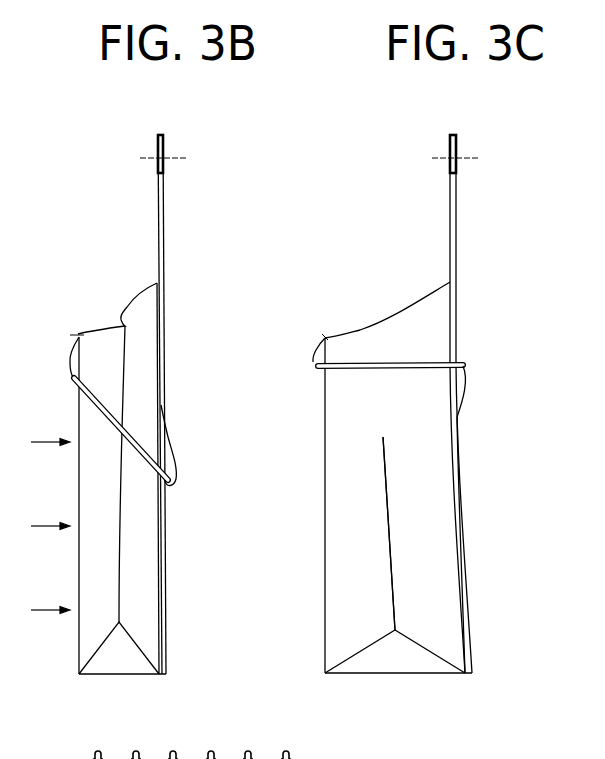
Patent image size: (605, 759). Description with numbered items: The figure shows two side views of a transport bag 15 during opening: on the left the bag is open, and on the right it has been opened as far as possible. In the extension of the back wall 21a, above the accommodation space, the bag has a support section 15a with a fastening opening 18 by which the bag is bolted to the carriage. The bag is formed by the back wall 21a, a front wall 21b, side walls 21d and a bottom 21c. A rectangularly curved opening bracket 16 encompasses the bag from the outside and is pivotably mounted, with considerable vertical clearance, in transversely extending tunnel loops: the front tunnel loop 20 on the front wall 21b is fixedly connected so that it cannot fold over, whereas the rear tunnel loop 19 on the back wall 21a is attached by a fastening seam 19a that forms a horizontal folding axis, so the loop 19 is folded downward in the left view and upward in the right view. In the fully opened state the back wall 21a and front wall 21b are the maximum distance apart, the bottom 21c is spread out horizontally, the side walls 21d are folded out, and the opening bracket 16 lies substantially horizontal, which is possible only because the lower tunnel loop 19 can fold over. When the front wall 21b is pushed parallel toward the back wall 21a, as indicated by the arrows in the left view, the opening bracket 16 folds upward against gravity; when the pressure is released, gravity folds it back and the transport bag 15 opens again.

In FIG. 3B, the transport bag 15 is at (180, 525).
In FIG. 3C, the transport bag 15 is at (479, 470).
In FIG. 3B, the support section 15a is at (163, 240).
In FIG. 3C, the support section 15a is at (457, 240).
In FIG. 3B, the opening bracket 16 is at (120, 428).
In FIG. 3C, the opening bracket 16 is at (357, 365).
In FIG. 3B, the fastening opening 18 is at (180, 152).
In FIG. 3C, the fastening opening 18 is at (472, 152).
In FIG. 3B, the rear tunnel loop 19 is at (170, 453).
In FIG. 3C, the rear tunnel loop 19 is at (466, 383).
In FIG. 3B, the fastening seam 19a is at (164, 423).
In FIG. 3B, the front tunnel loop 20 is at (70, 360).
In FIG. 3C, the front tunnel loop 20 is at (313, 356).
In FIG. 3C, the back wall 21a is at (470, 630).
In FIG. 3C, the front wall 21b is at (325, 615).
In FIG. 3C, the bottom 21c is at (398, 673).
In FIG. 3C, the side walls 21d is at (435, 530).